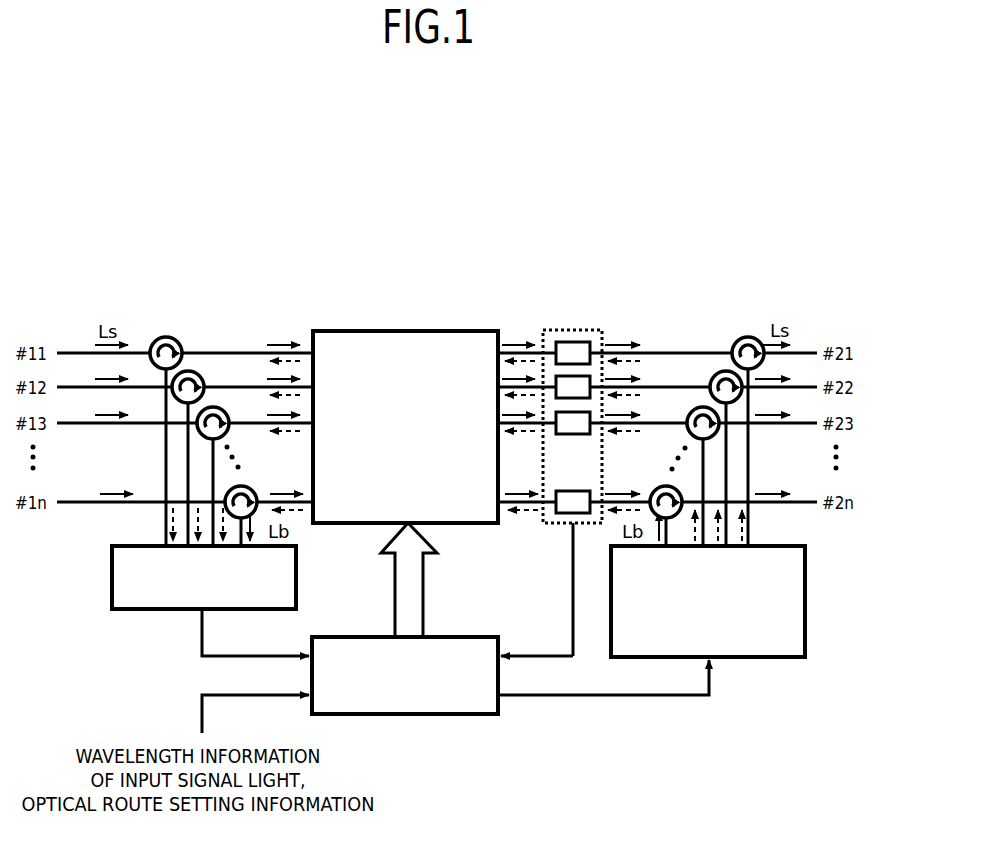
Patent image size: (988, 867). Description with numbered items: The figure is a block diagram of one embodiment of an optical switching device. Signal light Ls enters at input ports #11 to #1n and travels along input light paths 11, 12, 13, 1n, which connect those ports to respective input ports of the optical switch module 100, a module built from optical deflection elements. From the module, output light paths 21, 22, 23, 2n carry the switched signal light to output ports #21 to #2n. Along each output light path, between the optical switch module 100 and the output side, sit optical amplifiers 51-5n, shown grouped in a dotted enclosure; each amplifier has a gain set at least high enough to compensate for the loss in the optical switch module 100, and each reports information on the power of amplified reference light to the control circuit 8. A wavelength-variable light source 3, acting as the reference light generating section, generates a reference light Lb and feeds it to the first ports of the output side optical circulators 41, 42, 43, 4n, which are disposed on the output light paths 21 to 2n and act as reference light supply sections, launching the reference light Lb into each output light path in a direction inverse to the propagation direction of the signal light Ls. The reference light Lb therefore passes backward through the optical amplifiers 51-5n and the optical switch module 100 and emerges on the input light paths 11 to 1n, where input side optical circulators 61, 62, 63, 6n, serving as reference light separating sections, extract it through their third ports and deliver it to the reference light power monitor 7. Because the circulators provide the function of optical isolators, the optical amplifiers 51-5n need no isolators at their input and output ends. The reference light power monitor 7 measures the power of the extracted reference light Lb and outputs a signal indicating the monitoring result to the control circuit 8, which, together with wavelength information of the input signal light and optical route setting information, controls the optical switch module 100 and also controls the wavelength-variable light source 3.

The input light path 11 is at (78, 352).
The input light path 12 is at (78, 386).
The input light path 13 is at (78, 422).
The input light path 1n is at (81, 501).
The output light path 21 is at (798, 352).
The output light path 22 is at (799, 386).
The output light path 23 is at (799, 422).
The output light path 2n is at (798, 501).
The input side optical circulator 61 is at (172, 337).
The input side optical circulator 62 is at (194, 372).
The input side optical circulator 63 is at (219, 408).
The input side optical circulator 6n is at (247, 487).
The output side optical circulator 41 is at (748, 337).
The output side optical circulator 42 is at (723, 372).
The output side optical circulator 43 is at (699, 408).
The output side optical circulator 4n is at (661, 488).
The optical switch module 100 is at (417, 331).
The optical amplifiers 51-5n is at (595, 308).
The reference light power monitor 7 is at (180, 609).
The control circuit 8 is at (405, 714).
The wavelength-variable light source 3 is at (740, 657).